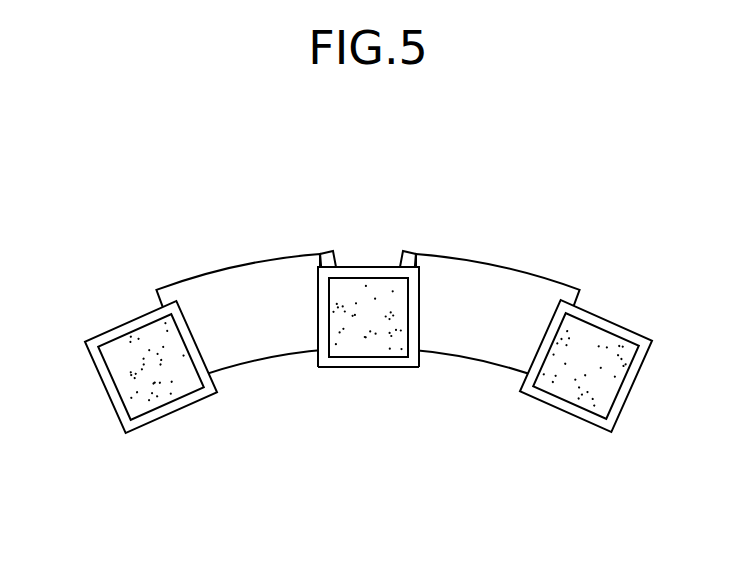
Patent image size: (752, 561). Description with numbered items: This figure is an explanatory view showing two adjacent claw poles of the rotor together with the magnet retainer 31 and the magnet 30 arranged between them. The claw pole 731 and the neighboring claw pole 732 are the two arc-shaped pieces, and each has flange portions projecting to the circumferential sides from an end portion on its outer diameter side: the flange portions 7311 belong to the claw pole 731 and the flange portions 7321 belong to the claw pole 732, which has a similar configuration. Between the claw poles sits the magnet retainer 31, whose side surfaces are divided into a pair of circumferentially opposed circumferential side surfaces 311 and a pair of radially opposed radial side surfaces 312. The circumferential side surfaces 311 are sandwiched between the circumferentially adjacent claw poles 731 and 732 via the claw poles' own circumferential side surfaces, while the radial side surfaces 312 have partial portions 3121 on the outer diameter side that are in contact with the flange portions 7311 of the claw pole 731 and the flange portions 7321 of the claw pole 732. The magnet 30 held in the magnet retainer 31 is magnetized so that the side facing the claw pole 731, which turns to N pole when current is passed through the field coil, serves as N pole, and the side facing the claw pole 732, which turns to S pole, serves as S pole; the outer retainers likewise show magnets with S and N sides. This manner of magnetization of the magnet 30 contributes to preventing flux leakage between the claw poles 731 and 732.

The magnet 30 is at (157, 402).
The magnet retainer 31 is at (125, 323).
The circumferential side surfaces 311 is at (318, 318).
The radial side surfaces 312 is at (360, 266).
The partial portions 3121 is at (323, 250).
The claw pole 731 is at (242, 263).
The claw pole 732 is at (508, 272).
The flange portions 7311 is at (325, 250).
The flange portions 7321 is at (417, 250).